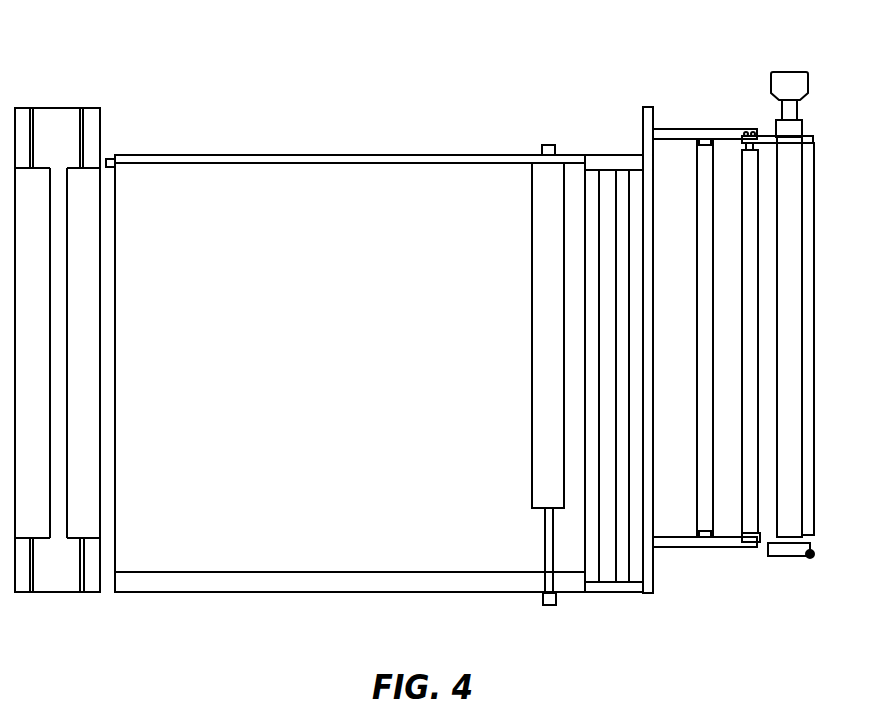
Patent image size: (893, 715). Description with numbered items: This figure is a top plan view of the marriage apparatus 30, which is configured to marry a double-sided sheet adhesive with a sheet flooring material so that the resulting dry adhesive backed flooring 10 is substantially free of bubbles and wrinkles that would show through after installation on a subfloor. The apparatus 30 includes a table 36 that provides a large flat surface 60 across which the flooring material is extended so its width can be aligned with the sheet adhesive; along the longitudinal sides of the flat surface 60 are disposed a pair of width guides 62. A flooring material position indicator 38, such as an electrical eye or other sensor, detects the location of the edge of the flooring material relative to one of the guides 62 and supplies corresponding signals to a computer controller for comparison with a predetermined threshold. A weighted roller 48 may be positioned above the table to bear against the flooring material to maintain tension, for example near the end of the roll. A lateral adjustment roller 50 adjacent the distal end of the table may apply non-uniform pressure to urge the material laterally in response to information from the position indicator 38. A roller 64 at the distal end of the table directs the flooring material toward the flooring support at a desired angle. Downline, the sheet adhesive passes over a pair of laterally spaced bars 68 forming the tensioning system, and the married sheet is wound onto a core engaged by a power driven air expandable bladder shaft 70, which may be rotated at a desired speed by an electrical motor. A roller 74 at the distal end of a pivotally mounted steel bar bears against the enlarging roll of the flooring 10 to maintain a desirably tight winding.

The dry adhesive backed flooring 10 is at (795, 382).
The marriage apparatus 30 is at (449, 72).
The table 36 is at (422, 247).
The flooring material position indicator 38 is at (113, 158).
The weighted roller 48 is at (560, 367).
The lateral adjustment roller 50 is at (705, 225).
The flat surface 60 is at (338, 389).
The width guides 62 is at (332, 155).
The roller 64 is at (742, 222).
The laterally spaced bars 68 is at (633, 180).
The power driven air expandable bladder shaft 70 is at (798, 110).
The roller 74 is at (815, 240).